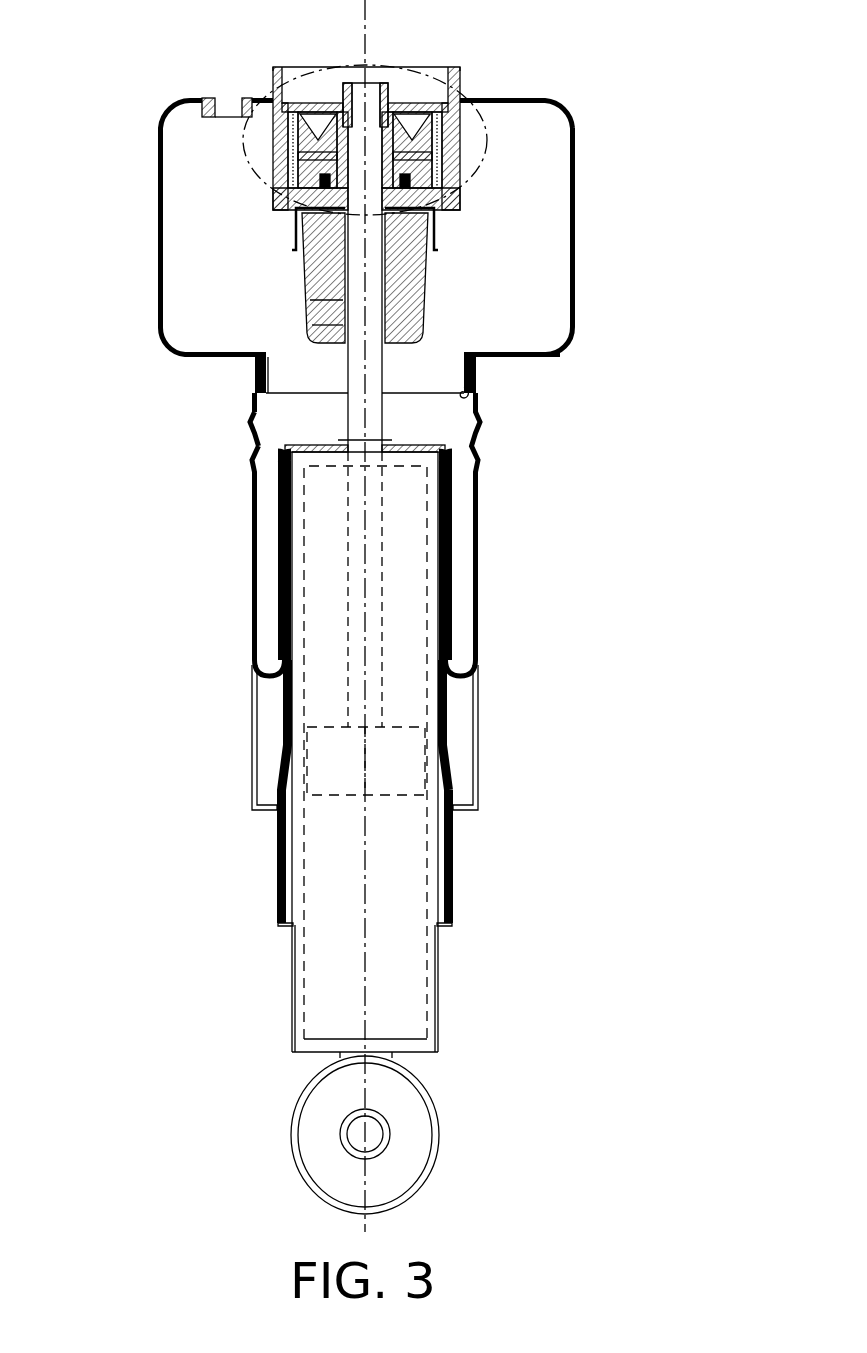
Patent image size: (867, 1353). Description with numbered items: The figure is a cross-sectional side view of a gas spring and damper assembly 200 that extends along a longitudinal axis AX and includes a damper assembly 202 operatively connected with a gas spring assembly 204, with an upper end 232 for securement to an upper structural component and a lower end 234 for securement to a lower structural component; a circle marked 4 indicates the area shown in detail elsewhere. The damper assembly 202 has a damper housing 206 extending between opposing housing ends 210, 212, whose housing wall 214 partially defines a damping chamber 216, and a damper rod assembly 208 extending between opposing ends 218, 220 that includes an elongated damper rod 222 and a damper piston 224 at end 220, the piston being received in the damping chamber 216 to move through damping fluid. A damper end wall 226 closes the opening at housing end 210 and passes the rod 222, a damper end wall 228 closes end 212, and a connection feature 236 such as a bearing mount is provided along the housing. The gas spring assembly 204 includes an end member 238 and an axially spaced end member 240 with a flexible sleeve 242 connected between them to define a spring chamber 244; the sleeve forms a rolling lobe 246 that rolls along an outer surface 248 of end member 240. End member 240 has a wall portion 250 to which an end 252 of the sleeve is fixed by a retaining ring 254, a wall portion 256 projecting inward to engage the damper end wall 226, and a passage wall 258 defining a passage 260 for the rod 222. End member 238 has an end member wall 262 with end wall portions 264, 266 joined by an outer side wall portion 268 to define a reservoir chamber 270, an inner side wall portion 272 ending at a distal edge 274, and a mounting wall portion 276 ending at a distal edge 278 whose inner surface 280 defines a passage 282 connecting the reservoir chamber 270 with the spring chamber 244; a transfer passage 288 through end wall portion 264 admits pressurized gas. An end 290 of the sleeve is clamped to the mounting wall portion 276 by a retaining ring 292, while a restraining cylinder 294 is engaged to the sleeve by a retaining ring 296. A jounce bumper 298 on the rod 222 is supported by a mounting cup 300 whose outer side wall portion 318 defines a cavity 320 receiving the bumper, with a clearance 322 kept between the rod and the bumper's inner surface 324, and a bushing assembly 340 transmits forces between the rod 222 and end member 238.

The gas spring and damper assembly 200 is at (634, 165).
The damper assembly 202 is at (496, 1067).
The gas spring assembly 204 is at (583, 467).
The damper housing 206 is at (272, 980).
The damper rod assembly 208 is at (330, 608).
The housing end 210 is at (232, 490).
The housing end 212 is at (255, 1040).
The housing wall 214 is at (297, 1000).
The damping chamber 216 is at (330, 916).
The end of damper rod assembly 218 is at (386, 46).
The end of damper rod assembly 220 is at (308, 717).
The elongated damper rod 222 is at (384, 413).
The damper piston 224 is at (316, 747).
The damper end wall 226 is at (430, 450).
The damper end wall 228 is at (312, 1048).
The upper end of assembly 232 is at (620, 190).
The lower end of assembly 234 is at (523, 1040).
The connection feature 236 is at (318, 1163).
The end member 238 is at (580, 242).
The end member 240 is at (449, 762).
The flexible sleeve 242 is at (478, 520).
The spring chamber 244 is at (256, 423).
The rolling lobe 246 is at (463, 676).
The outer surface 248 is at (454, 862).
The wall portion 250 is at (447, 708).
The end of flexible sleeve 252 is at (276, 499).
The retaining ring 254 is at (277, 456).
The wall portion 256 is at (256, 438).
The passage wall 258 is at (343, 450).
The passage 260 is at (343, 442).
The end member wall 262 is at (158, 254).
The end wall portion 264 is at (509, 101).
The end wall portion 266 is at (545, 350).
The outer side wall portion 268 is at (577, 282).
The reservoir chamber 270 is at (550, 184).
The inner side wall portion 272 is at (463, 80).
The distal edge 274 is at (292, 66).
The mounting wall portion 276 is at (463, 350).
The distal edge 278 is at (284, 392).
The inner surface 280 is at (468, 393).
The passage 282 is at (433, 348).
The transfer passage 288 is at (226, 97).
The end of flexible sleeve 290 is at (249, 402).
The retaining ring 292 is at (255, 370).
The restraining cylinder 294 is at (249, 782).
The retaining ring 296 is at (481, 460).
The jounce bumper 298 is at (299, 280).
The mounting cup 300 is at (468, 150).
The outer side wall portion 318 is at (292, 230).
The cavity 320 is at (440, 252).
The clearance 322 is at (336, 324).
The inner surface 324 is at (336, 302).
The bushing assembly 340 is at (287, 153).
The detail circle FIG. 4 is at (245, 176).
The axis AX is at (368, 975).